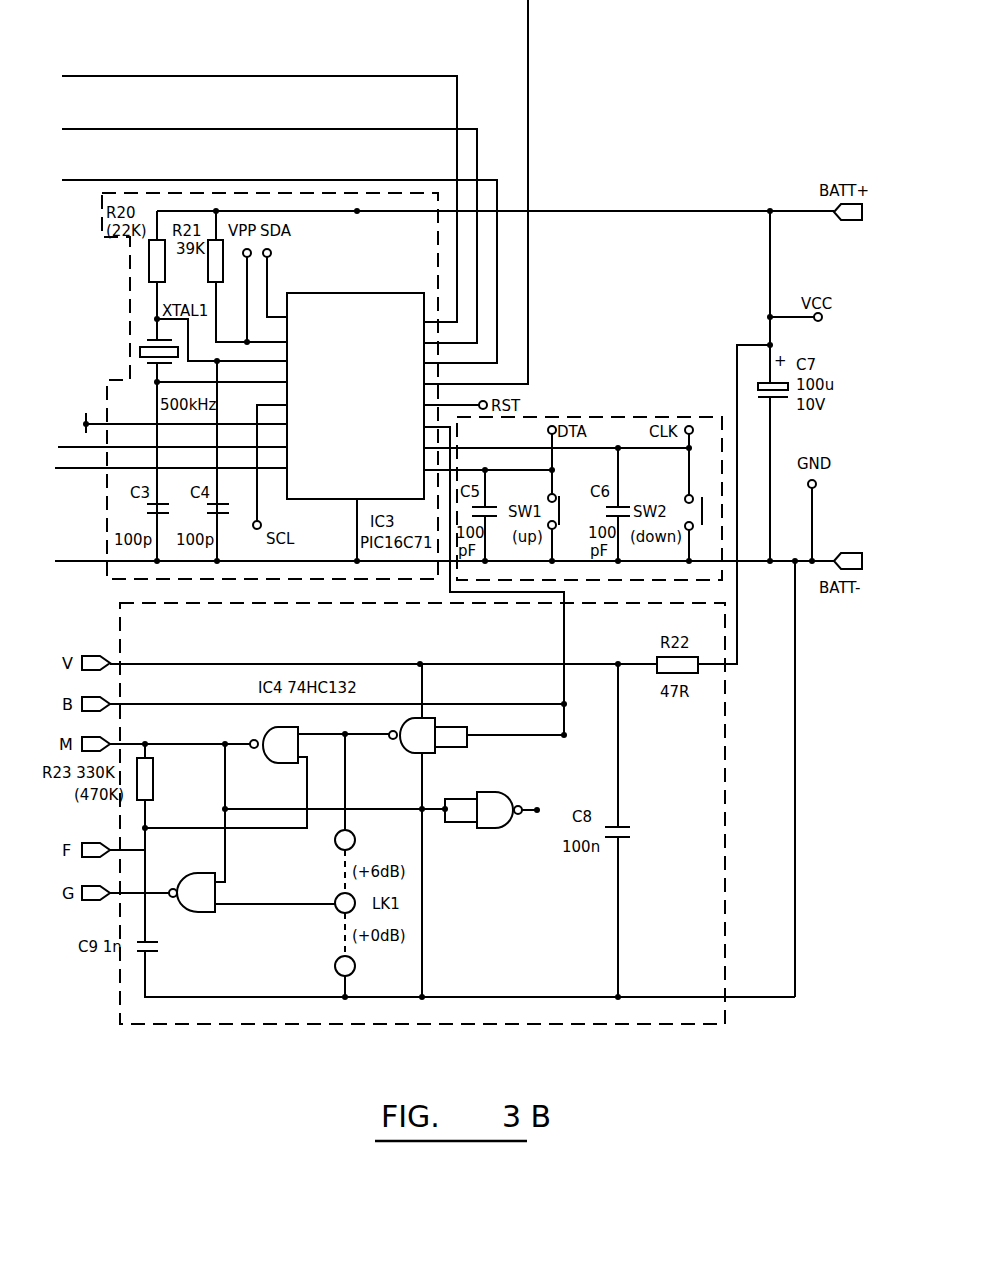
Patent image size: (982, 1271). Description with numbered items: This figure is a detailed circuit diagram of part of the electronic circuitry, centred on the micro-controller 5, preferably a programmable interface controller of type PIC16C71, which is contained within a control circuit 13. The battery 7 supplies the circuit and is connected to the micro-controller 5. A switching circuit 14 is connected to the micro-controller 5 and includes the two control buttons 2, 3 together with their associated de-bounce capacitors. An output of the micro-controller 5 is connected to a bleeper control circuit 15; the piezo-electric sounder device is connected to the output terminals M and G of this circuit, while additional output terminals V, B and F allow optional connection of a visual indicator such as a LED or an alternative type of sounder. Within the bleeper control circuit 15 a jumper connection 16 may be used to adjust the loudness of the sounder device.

The control circuit 13 is at (298, 192).
The micro-controller 5 is at (393, 292).
The switching circuit 14 is at (618, 417).
The control button 2 is at (559, 500).
The control button 3 is at (702, 500).
The battery 7 is at (848, 219).
The bleeper control circuit 15 is at (725, 902).
The jumper connection 16 is at (335, 908).